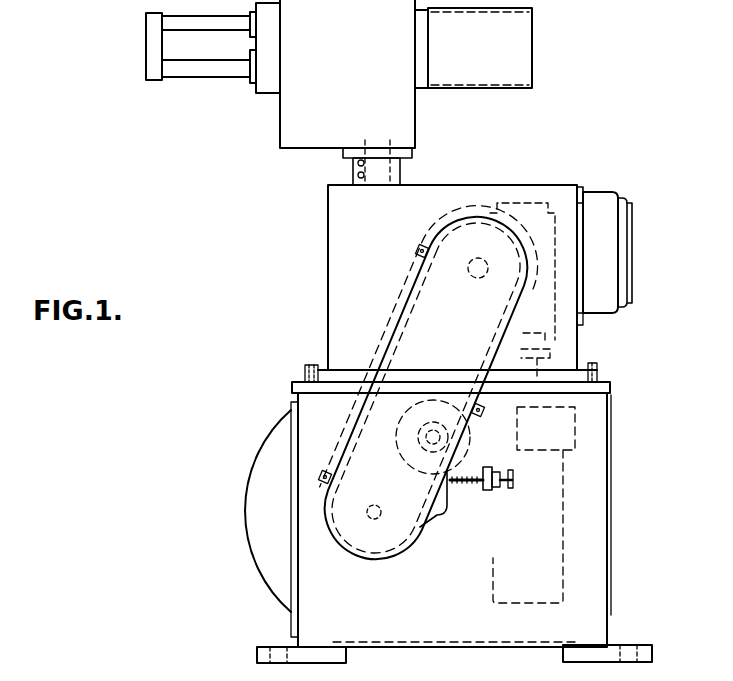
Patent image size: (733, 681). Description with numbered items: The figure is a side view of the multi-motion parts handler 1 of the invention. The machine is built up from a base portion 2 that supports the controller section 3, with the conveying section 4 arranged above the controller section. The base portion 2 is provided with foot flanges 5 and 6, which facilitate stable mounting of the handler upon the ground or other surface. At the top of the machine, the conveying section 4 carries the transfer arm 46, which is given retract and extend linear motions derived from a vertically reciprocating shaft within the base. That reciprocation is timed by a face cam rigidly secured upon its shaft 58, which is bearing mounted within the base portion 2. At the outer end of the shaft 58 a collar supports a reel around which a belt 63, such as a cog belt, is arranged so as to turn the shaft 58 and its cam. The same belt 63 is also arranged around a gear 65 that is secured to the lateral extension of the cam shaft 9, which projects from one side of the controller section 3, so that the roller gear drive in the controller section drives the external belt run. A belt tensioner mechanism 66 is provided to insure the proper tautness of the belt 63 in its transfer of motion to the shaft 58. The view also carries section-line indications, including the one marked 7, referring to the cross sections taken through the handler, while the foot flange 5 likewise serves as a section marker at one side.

The multi-motion parts handler 1 is at (233, 141).
The base portion 2 is at (595, 541).
The controller section 3 is at (527, 190).
The conveying section 4 is at (415, 118).
The foot flange 5 is at (257, 655).
The foot flange 6 is at (652, 655).
The section line 7- 7 is at (375, 680).
The cam shaft 9 is at (482, 264).
The transfer arm 46 is at (223, 60).
The shaft 58 is at (372, 517).
The belt 63 is at (476, 347).
The gear 65 is at (510, 212).
The belt tensioner mechanism 66 is at (481, 446).